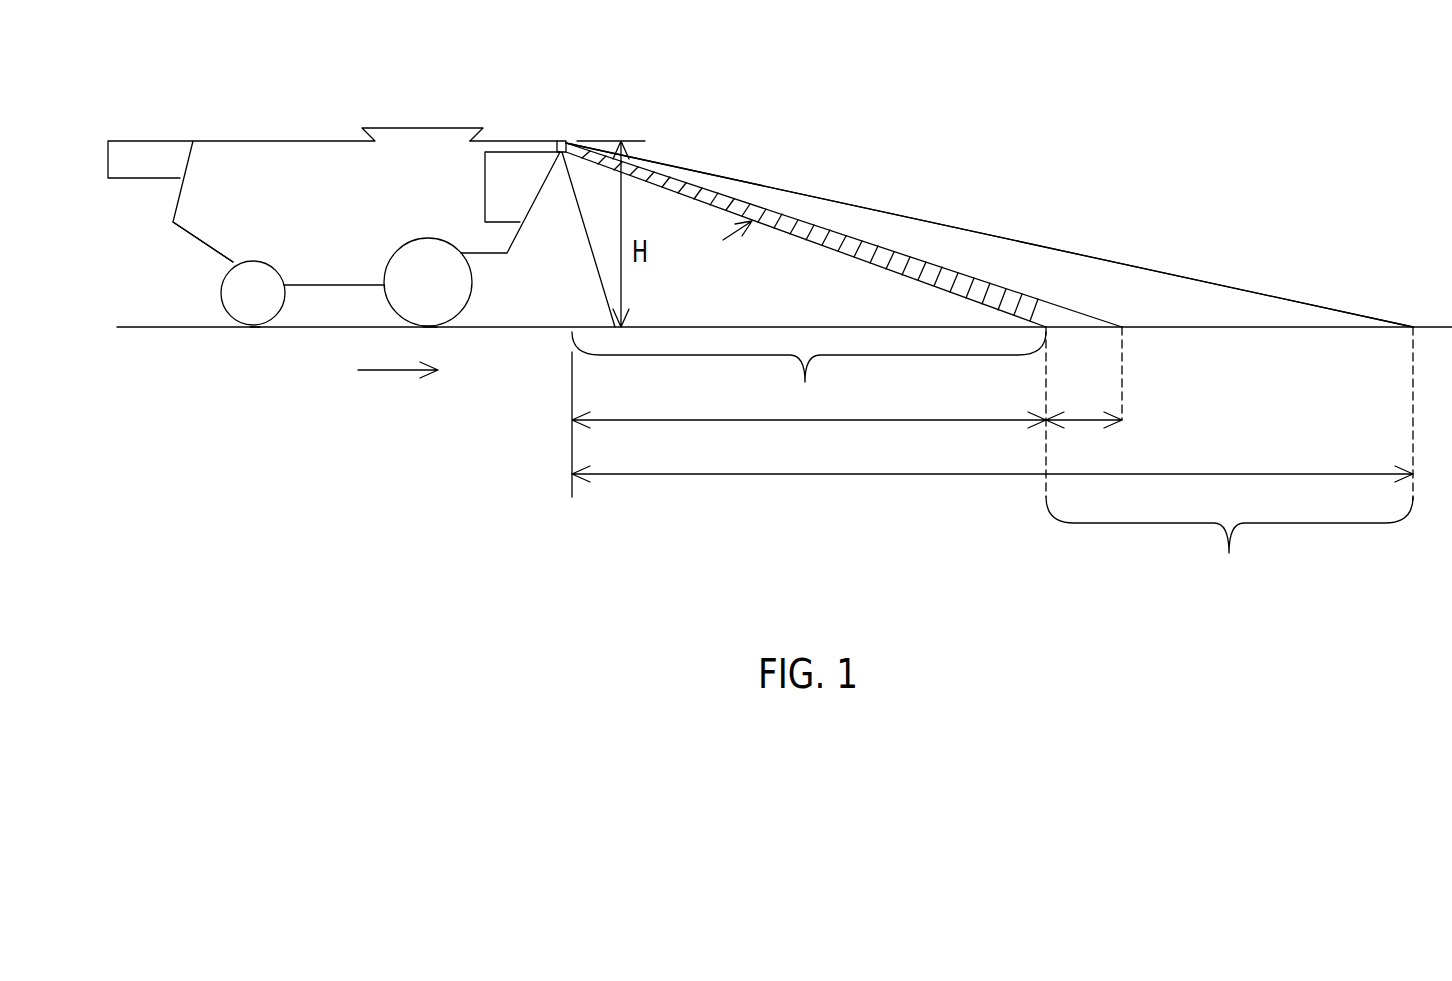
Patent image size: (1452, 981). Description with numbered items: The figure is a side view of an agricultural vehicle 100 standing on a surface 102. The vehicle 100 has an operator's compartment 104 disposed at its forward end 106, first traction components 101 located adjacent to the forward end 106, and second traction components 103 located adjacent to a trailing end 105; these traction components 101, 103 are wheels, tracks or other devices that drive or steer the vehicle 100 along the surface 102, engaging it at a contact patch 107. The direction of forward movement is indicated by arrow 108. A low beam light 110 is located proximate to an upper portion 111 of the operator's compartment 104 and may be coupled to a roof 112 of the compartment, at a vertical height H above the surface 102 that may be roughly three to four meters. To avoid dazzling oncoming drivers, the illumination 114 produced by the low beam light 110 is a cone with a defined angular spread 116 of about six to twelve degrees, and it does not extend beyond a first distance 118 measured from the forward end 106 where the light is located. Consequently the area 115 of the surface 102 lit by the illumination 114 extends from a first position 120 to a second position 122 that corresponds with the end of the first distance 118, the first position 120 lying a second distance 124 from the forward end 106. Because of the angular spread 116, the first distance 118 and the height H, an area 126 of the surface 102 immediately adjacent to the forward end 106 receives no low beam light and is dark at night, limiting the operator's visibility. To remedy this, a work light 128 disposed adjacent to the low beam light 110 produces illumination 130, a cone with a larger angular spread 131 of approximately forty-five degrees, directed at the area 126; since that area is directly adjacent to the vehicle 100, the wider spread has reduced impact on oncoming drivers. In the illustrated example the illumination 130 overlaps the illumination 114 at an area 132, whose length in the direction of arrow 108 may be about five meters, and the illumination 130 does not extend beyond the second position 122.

The agricultural vehicle 100 is at (308, 141).
The first traction components 101 is at (473, 283).
The surface 102 is at (200, 328).
The second traction components 103 is at (222, 291).
The operator's compartment 104 is at (537, 187).
The trailing end 105 is at (188, 232).
The forward end 106 is at (571, 236).
The contact patch 107 is at (257, 329).
The arrow 108 is at (393, 372).
The low beam light 110 is at (642, 117).
The upper portion 111 is at (535, 95).
The roof 112 is at (513, 141).
The illumination 114 is at (910, 217).
The area 115 is at (1229, 547).
The angular spread 116 is at (786, 180).
The first distance 118 is at (925, 476).
The first position 120 is at (1048, 330).
The second position 122 is at (1413, 327).
The second distance 124 is at (700, 422).
The area 126 is at (809, 373).
The work light 128 is at (566, 142).
The illumination 130 is at (603, 295).
The angular spread 131 is at (672, 162).
The area 132 is at (1070, 422).